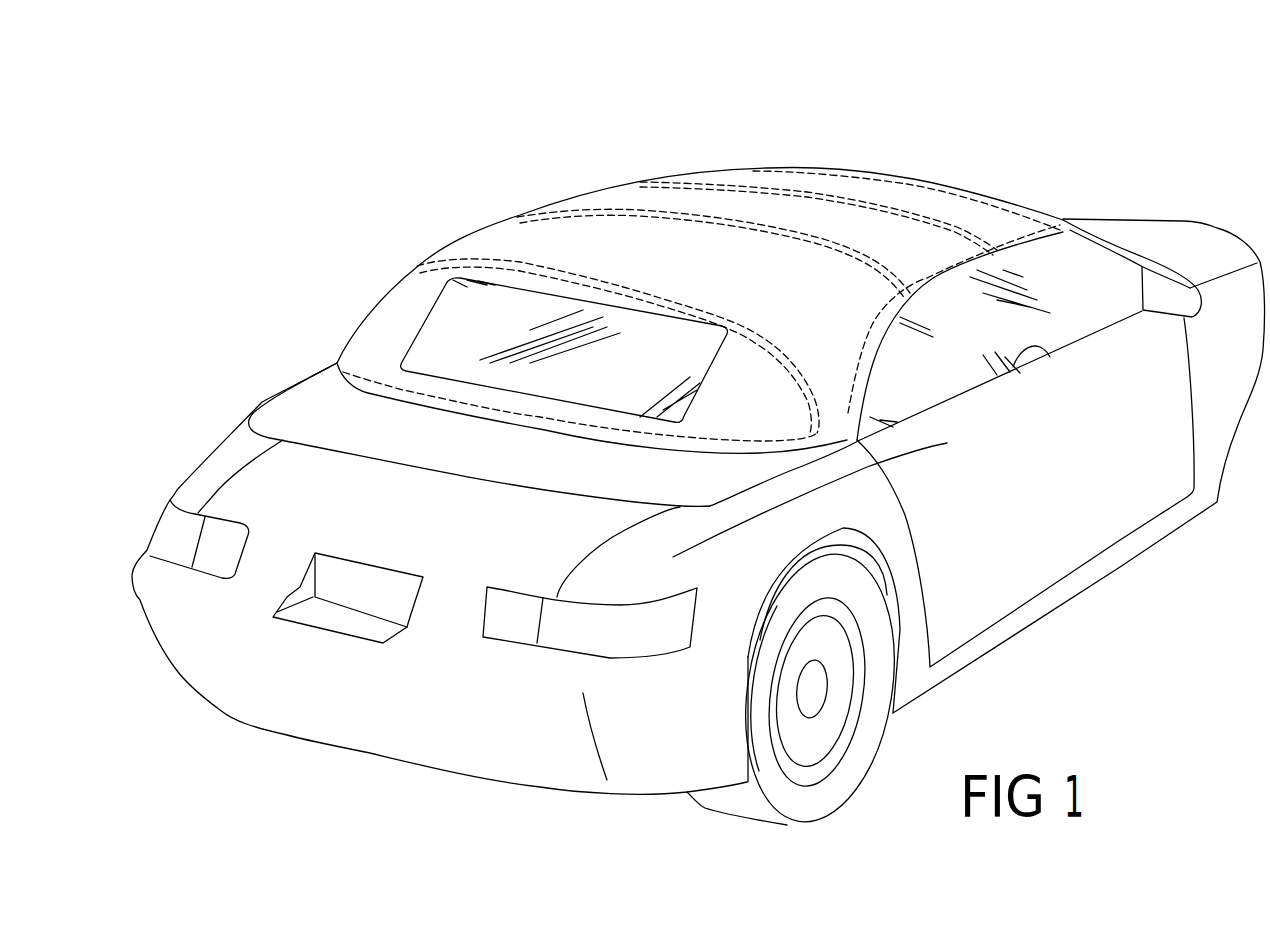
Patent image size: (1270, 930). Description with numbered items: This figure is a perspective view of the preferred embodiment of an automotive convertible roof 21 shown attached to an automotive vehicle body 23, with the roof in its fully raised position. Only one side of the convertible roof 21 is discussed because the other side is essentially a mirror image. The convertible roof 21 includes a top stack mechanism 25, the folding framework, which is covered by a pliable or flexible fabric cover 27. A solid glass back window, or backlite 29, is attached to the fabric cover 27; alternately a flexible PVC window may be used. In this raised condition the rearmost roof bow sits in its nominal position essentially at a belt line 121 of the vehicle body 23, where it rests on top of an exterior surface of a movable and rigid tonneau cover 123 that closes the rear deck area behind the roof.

The convertible roof 21 is at (689, 157).
The automotive vehicle body 23 is at (893, 560).
The top stack mechanism 25 is at (527, 178).
The fabric cover 27 is at (800, 213).
The backlite 29 is at (593, 361).
The belt line 121 is at (1050, 357).
The tonneau cover 123 is at (310, 413).